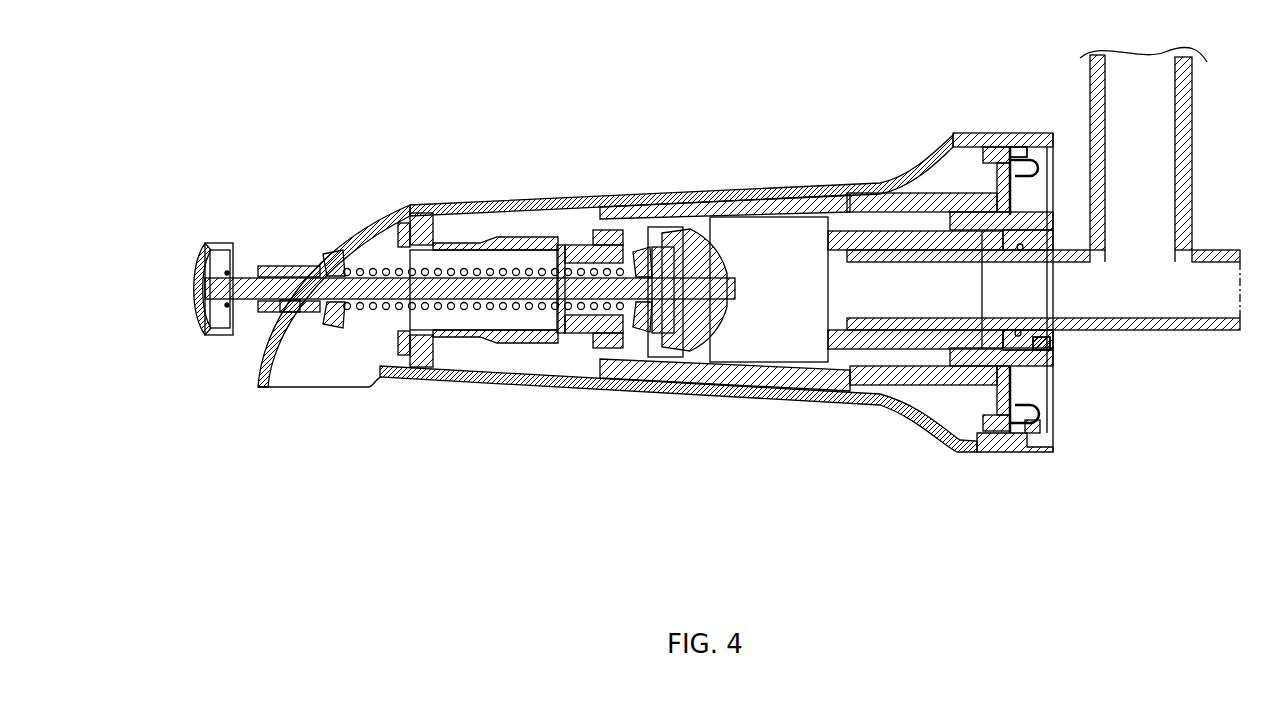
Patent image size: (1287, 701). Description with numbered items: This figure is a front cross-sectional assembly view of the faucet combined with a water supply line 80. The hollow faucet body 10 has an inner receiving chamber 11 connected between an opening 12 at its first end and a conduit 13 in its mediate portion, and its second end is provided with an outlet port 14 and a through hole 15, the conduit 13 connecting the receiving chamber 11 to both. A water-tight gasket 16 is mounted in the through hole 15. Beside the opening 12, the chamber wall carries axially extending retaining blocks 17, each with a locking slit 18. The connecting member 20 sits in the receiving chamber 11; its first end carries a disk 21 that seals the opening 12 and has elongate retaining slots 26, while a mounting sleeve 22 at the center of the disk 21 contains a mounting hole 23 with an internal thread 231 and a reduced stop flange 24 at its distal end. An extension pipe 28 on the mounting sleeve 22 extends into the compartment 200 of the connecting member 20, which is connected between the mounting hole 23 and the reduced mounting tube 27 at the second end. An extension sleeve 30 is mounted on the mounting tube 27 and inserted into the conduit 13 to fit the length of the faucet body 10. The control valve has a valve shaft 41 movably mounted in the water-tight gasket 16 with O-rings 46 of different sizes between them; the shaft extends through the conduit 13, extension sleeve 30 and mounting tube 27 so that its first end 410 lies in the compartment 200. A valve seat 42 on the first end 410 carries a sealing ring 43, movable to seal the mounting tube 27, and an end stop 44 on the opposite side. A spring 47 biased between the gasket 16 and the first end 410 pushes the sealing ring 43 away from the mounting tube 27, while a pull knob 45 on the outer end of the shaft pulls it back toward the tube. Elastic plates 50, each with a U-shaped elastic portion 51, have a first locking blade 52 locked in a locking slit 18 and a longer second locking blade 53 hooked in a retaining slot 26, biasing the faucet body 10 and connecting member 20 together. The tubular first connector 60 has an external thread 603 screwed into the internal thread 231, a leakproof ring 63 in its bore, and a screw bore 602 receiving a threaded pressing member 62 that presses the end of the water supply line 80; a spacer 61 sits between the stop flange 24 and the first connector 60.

The faucet body 10 is at (765, 398).
The receiving chamber 11 is at (510, 345).
The opening 12 is at (1053, 140).
The conduit 13 is at (408, 208).
The outlet port 14 is at (268, 387).
The through hole 15 is at (295, 312).
The water-tight gasket 16 is at (322, 258).
The retaining block 17 is at (980, 445).
The locking slit 18 is at (1013, 135).
The connecting member 20 is at (790, 195).
The disk 21 is at (1040, 185).
The mounting sleeve 22 is at (925, 408).
The mounting hole 23 is at (1040, 231).
The stop flange 24 is at (848, 240).
The retaining slot 26 is at (983, 166).
The mounting tube 27 is at (598, 244).
The extension pipe 28 is at (832, 320).
The extension sleeve 30 is at (508, 228).
The valve shaft 41 is at (533, 300).
The valve seat 42 is at (702, 358).
The sealing ring 43 is at (665, 357).
The end stop 44 is at (722, 205).
The pull knob 45 is at (210, 336).
The O-ring 46 is at (216, 243).
The spring 47 is at (487, 322).
The elastic plate 50 is at (1020, 428).
The elastic portion 51 is at (1053, 145).
The first locking blade 52 is at (1018, 152).
The second locking blade 53 is at (920, 163).
The first connector 60 is at (1040, 308).
The spacer 61 is at (890, 366).
The threaded pressing member 62 is at (1028, 340).
The leakproof ring 63 is at (985, 306).
The water supply line 80 is at (1208, 235).
The compartment 200 is at (738, 358).
The internal thread 231 is at (1041, 343).
The first end 410 is at (575, 333).
The screw bore 602 is at (1030, 348).
The external thread 603 is at (1043, 385).